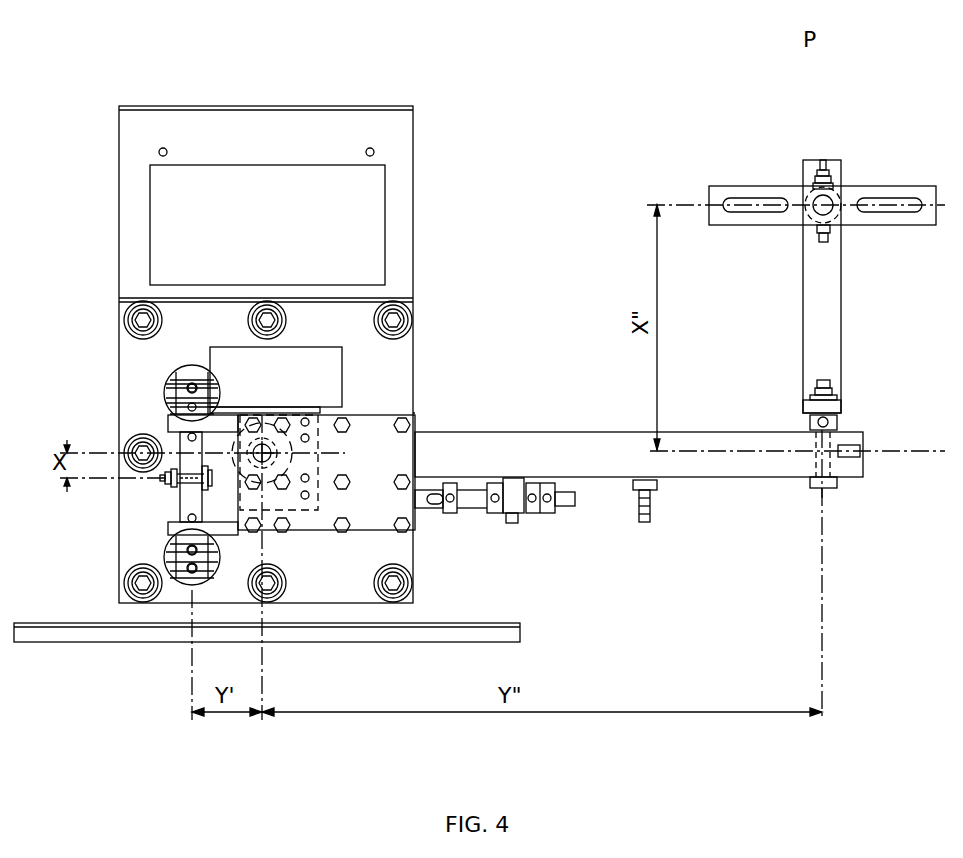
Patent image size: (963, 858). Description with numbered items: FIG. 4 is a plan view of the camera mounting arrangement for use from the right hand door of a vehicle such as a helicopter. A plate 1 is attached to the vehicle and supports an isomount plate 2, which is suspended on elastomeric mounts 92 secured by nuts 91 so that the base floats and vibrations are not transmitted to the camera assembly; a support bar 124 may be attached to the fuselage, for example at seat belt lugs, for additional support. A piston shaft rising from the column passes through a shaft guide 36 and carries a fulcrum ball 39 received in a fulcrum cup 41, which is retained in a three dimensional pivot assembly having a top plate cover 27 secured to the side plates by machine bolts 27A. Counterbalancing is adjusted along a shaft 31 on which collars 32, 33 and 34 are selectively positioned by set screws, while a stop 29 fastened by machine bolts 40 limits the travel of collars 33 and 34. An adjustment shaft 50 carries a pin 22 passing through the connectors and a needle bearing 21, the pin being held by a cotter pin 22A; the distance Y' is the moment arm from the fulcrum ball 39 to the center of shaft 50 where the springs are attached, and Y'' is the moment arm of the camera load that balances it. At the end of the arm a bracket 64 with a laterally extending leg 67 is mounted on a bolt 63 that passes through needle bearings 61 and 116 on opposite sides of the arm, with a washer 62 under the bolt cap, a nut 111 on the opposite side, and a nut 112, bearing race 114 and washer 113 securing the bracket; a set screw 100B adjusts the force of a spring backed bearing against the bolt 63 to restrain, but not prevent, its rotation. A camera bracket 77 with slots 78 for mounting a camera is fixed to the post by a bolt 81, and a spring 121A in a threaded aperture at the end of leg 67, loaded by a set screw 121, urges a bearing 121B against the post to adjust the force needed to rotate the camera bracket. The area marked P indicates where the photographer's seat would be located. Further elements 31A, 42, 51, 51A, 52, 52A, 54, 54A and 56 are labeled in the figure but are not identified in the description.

The plate 1 is at (330, 122).
The isomount plate 2 is at (396, 362).
The needle bearing 21 is at (196, 483).
The pin 22 is at (166, 479).
The cotter pin 22A is at (170, 483).
The top plate cover 27 is at (327, 473).
The machine bolts 27A is at (408, 533).
The stop 29 is at (514, 480).
The shaft 31 is at (575, 498).
The rod end 31A is at (435, 508).
The collar 32 is at (555, 513).
The collar 33 is at (492, 513).
The collar 34 is at (451, 483).
The shaft guide 36 is at (245, 488).
The fulcrum ball 39 is at (275, 453).
The machine bolts 40 is at (513, 523).
The fulcrum cup 41 is at (277, 448).
The bolt 42 is at (652, 506).
The adjustment shaft 50 is at (180, 376).
The lower clamp jaw 51 is at (180, 572).
The lower clamp screw 51A is at (194, 572).
The lower clamp 52 is at (168, 545).
The clamp screw 52A is at (176, 391).
The clamp jaw 54 is at (172, 418).
The clamp jaw plate 54A is at (172, 403).
The clamp plate 56 is at (176, 385).
The needle bearing 61 is at (812, 440).
The washer 62 is at (840, 479).
The bolt 63 is at (826, 490).
The bracket 64 is at (842, 404).
The leg 67 is at (842, 314).
The camera bracket 77 is at (714, 186).
The slots 78 is at (773, 200).
The bolt 81 is at (828, 240).
The nut 91 is at (143, 320).
The mounts 92 is at (413, 304).
The set screw 100B is at (863, 451).
The nut 111 is at (838, 421).
The nut 112 is at (835, 390).
The washer 113 is at (815, 395).
The bearing race 114 is at (812, 400).
The needle bearing 116 is at (812, 430).
The set screw 121 is at (824, 160).
The spring 121A is at (826, 176).
The bearing 121B is at (828, 192).
The support bar 124 is at (520, 632).